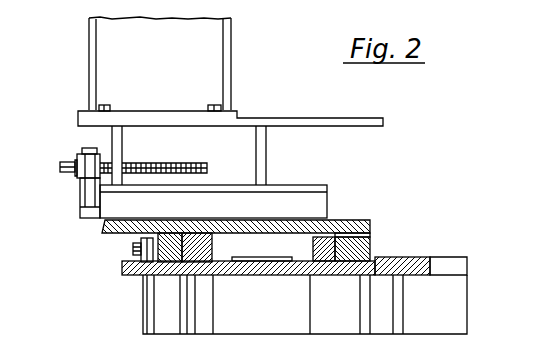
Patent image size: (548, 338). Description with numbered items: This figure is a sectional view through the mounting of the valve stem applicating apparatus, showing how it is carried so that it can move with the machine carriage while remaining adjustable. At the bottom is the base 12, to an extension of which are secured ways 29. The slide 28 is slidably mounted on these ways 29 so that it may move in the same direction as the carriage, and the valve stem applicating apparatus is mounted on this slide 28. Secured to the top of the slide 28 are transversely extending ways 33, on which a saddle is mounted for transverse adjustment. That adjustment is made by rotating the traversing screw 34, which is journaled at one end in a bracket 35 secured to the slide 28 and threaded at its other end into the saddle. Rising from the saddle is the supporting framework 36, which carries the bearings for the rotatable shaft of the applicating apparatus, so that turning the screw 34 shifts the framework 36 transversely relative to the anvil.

The base 12 is at (418, 261).
The slide 28 is at (103, 227).
The ways 29 is at (372, 241).
The transversely extending ways 33 is at (322, 202).
The traversing screw 34 is at (182, 146).
The bracket 35 is at (84, 196).
The supporting framework 36 is at (88, 68).